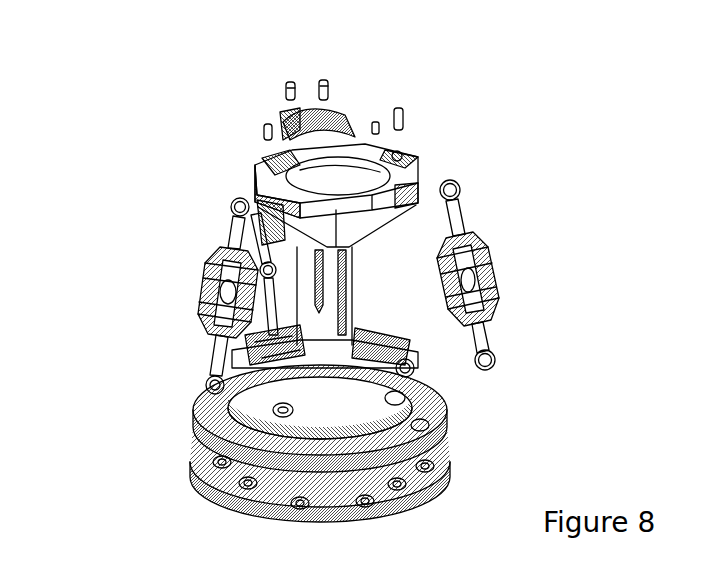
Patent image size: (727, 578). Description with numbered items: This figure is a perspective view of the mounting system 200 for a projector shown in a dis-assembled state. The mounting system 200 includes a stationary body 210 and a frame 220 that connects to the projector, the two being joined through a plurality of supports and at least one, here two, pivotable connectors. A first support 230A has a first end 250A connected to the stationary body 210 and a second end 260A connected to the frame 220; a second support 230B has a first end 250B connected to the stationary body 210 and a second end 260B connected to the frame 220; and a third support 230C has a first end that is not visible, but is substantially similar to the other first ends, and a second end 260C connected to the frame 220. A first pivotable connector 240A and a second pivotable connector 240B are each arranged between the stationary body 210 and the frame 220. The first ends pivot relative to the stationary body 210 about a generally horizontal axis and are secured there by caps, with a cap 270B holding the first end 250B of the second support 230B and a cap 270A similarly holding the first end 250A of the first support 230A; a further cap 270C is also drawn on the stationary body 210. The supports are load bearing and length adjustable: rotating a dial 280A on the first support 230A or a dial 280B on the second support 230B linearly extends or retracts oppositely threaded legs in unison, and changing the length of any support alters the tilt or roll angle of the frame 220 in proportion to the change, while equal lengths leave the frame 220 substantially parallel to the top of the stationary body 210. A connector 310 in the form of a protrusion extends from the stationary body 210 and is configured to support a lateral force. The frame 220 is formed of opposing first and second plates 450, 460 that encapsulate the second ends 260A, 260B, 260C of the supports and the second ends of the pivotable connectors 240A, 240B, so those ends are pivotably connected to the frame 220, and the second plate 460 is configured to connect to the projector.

The mounting system 200 is at (573, 88).
The stationary body 210 is at (418, 192).
The frame 220 is at (445, 390).
The first support 230A is at (195, 283).
The second support 230B is at (473, 177).
The third support 230C is at (250, 175).
The first pivotable connector 240A is at (373, 333).
The second pivotable connector 240B is at (262, 340).
The first end of the first support 250A is at (231, 203).
The first end of the second support 250B is at (457, 178).
The second end of the first support 260A is at (207, 389).
The second end of the second support 260B is at (495, 363).
The second end of the third support 260C is at (261, 268).
The cap 270A is at (263, 160).
The cap 270B is at (403, 130).
The third platform mount 270C is at (306, 107).
The dial 280A is at (203, 305).
The dial 280B is at (498, 285).
The connector 310 is at (353, 273).
The first plate 450 is at (196, 423).
The second plate 460 is at (212, 492).